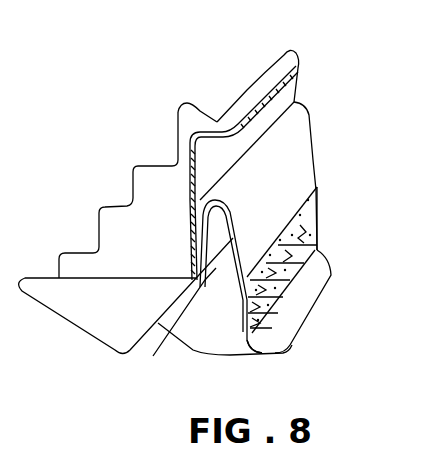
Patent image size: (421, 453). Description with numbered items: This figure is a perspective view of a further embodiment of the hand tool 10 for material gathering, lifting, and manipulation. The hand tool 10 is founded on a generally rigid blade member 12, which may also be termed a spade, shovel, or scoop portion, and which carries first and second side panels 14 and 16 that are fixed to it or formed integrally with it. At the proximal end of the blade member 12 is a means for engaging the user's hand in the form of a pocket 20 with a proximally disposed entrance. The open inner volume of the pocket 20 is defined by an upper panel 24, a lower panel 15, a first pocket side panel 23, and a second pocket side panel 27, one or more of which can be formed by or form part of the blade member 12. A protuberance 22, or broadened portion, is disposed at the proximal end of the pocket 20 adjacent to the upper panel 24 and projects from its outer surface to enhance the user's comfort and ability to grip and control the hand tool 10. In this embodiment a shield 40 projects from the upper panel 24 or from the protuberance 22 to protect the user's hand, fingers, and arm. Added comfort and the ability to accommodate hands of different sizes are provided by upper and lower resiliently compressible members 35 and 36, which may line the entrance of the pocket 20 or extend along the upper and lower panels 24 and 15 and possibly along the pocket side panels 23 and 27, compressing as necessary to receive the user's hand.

The hand tool 10 is at (134, 84).
The blade member 12 is at (143, 180).
The first side panel 14 is at (118, 318).
The lower panel 15 is at (257, 340).
The second side panel 16 is at (198, 116).
The pocket 20 is at (279, 357).
The protuberance 22 is at (303, 101).
The first pocket side panel 23 is at (193, 352).
The upper panel 24 is at (176, 339).
The second pocket side panel 27 is at (313, 228).
The upper resiliently compressible member 35 is at (317, 193).
The lower resiliently compressible member 36 is at (300, 290).
The shield 40 is at (288, 50).